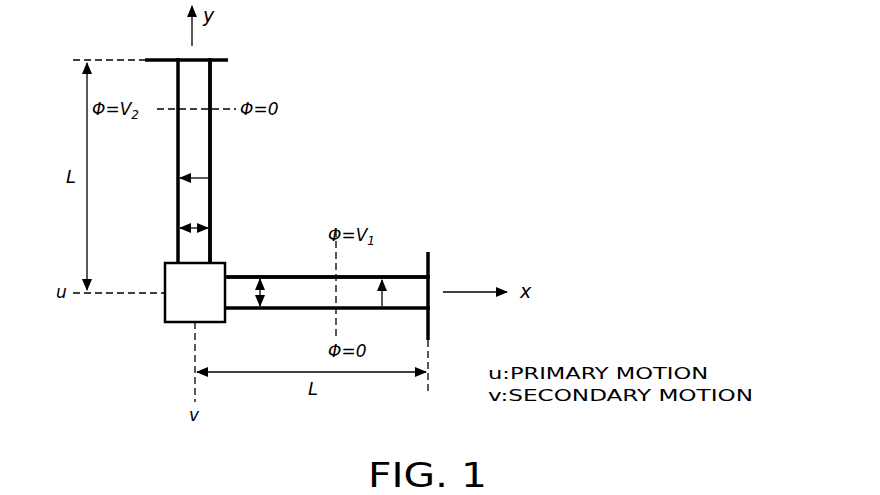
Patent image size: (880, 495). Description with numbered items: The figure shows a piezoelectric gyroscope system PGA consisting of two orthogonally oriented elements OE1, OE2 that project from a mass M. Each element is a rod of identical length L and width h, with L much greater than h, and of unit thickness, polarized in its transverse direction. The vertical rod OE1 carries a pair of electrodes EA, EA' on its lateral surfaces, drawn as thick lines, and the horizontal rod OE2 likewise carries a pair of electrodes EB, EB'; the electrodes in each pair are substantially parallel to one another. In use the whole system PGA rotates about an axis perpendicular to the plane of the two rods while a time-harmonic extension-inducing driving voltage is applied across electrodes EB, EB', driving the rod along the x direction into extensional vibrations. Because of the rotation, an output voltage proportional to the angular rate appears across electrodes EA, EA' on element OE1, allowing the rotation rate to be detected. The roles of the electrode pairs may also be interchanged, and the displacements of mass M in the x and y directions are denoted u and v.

The electrode EA is at (154, 161).
The electrode EA' is at (234, 70).
The orthogonally oriented element OE1 is at (215, 156).
The orthogonally oriented element OE2 is at (251, 270).
The electrode EB is at (327, 317).
The electrode EB' is at (449, 260).
The mass M is at (173, 276).
The piezoelectric gyroscope system PGA is at (408, 122).